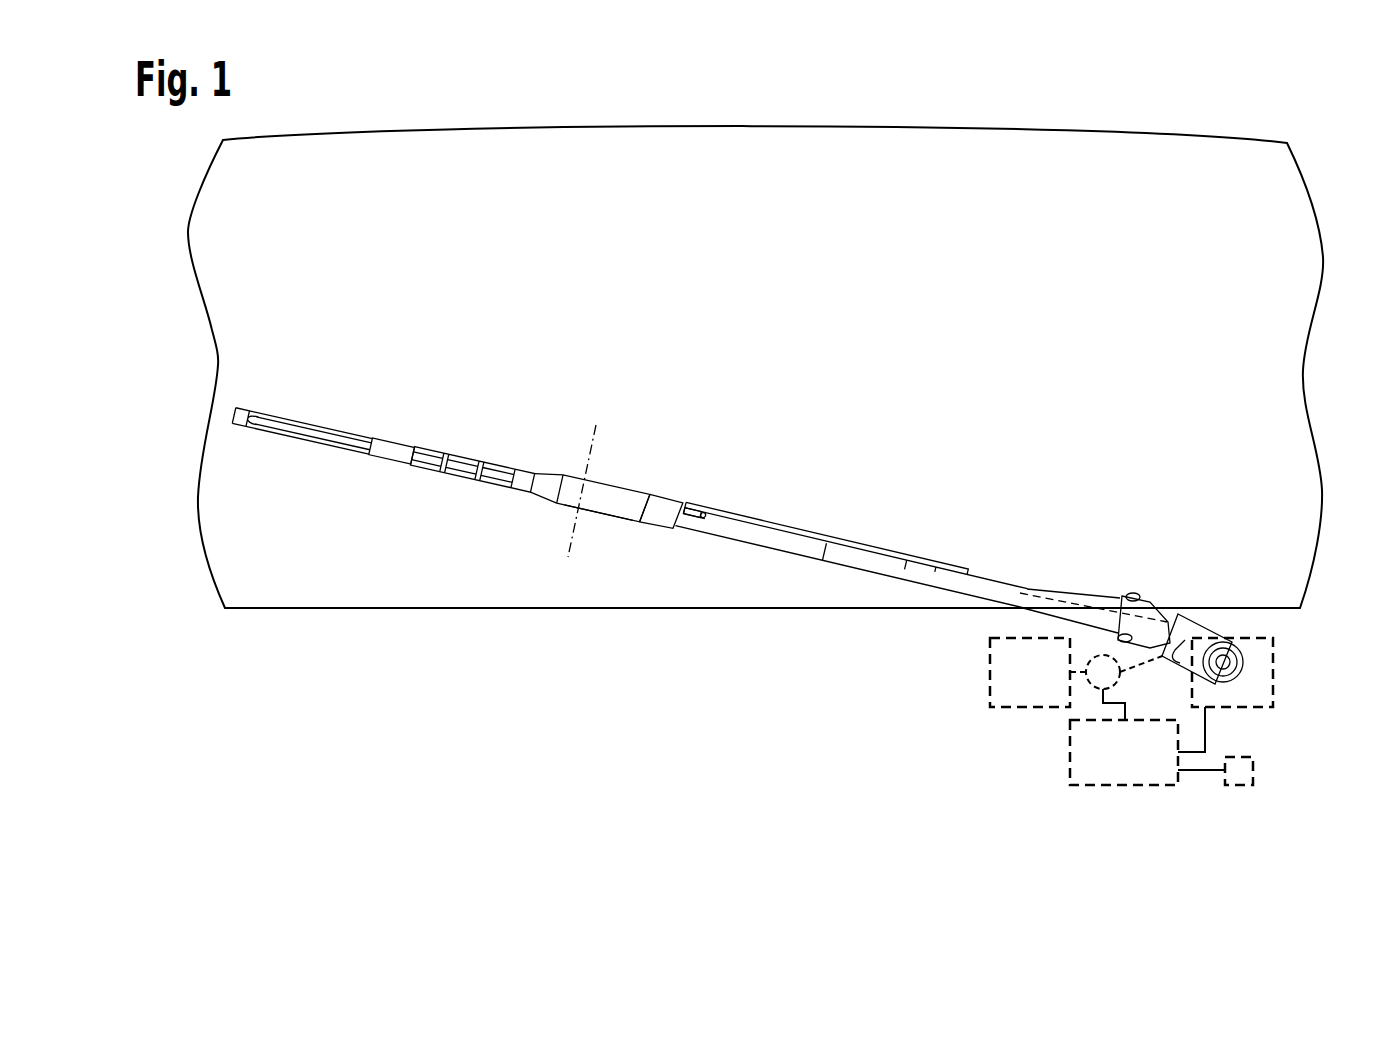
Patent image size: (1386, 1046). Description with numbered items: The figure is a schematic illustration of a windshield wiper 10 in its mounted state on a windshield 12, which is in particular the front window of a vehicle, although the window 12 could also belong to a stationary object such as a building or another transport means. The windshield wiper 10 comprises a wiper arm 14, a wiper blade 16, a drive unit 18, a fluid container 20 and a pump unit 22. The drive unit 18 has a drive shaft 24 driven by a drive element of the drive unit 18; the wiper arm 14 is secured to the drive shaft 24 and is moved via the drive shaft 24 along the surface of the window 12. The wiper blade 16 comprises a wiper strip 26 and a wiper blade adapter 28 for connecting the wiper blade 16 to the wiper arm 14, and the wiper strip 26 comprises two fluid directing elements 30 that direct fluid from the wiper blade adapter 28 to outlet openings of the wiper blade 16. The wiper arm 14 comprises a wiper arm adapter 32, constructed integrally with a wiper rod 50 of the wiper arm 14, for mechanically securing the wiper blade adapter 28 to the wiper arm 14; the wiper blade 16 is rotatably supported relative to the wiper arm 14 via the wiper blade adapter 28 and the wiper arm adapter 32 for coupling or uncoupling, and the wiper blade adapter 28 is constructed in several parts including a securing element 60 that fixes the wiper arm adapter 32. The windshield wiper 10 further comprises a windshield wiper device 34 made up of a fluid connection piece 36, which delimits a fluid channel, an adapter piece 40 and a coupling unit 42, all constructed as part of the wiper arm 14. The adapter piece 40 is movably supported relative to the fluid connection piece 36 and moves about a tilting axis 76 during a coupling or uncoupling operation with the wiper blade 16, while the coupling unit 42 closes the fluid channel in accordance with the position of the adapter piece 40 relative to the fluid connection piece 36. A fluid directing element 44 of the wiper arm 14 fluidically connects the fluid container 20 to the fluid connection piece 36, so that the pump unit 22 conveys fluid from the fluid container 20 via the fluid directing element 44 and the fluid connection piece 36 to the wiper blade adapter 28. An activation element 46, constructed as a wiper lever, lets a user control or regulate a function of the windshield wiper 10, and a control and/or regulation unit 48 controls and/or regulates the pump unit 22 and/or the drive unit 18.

The windshield wiper 10 is at (1222, 320).
The windshield 12 is at (1207, 158).
The wiper arm 14 is at (1070, 570).
The wiper blade 16 is at (487, 425).
The drive unit 18 is at (1283, 709).
The fluid container 20 is at (993, 712).
The pump unit 22 is at (1088, 692).
The drive shaft 24 is at (1225, 662).
The wiper strip 26 is at (390, 453).
The wiper blade adapter 28 is at (610, 478).
The fluid directing elements 30 is at (462, 453).
The wiper arm adapter 32 is at (683, 490).
The windshield wiper device 34 is at (658, 415).
The fluid connection piece 36 is at (700, 507).
The adapter piece 40 is at (666, 480).
The coupling unit 42 is at (738, 420).
The fluid directing element 44 is at (900, 583).
The activation element 46 is at (1255, 770).
The control and/or regulation unit 48 is at (1065, 790).
The wiper rod 50 is at (938, 565).
The securing element 60 is at (623, 507).
The tilting axis 76 is at (567, 548).